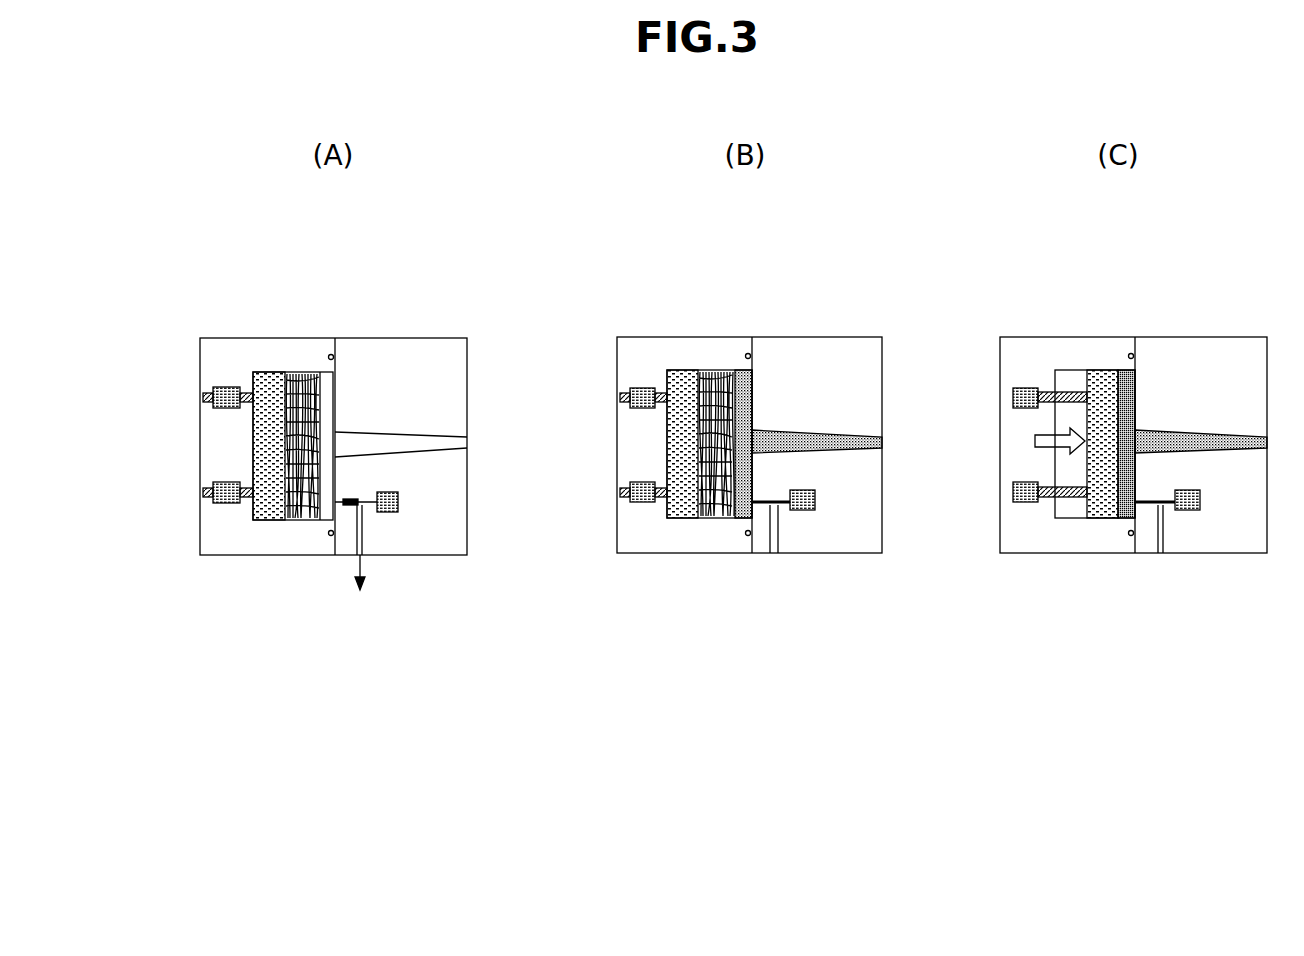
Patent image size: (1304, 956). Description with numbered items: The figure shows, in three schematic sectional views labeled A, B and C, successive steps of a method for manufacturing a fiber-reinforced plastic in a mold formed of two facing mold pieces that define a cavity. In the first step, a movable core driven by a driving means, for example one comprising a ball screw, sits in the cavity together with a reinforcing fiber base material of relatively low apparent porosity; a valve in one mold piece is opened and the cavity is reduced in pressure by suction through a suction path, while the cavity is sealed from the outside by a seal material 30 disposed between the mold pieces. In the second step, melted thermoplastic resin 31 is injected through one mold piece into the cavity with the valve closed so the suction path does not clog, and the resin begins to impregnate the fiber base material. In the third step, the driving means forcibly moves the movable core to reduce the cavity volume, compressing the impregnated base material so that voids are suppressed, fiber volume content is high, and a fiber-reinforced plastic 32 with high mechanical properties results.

The seal material 30 is at (334, 358).
The melted thermoplastic resin 31 is at (752, 392).
The fiber-reinforced plastic 32 is at (1136, 391).